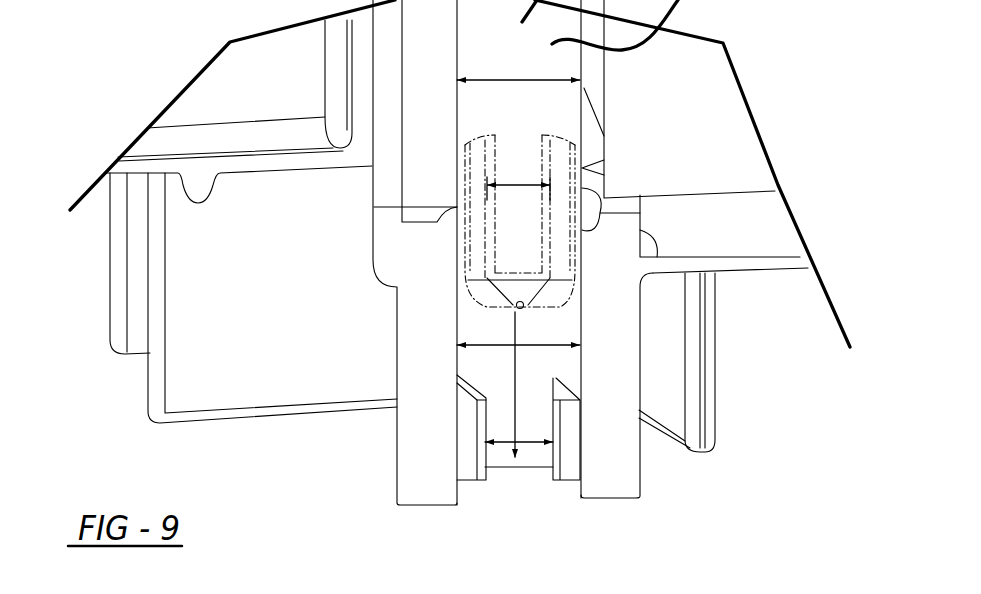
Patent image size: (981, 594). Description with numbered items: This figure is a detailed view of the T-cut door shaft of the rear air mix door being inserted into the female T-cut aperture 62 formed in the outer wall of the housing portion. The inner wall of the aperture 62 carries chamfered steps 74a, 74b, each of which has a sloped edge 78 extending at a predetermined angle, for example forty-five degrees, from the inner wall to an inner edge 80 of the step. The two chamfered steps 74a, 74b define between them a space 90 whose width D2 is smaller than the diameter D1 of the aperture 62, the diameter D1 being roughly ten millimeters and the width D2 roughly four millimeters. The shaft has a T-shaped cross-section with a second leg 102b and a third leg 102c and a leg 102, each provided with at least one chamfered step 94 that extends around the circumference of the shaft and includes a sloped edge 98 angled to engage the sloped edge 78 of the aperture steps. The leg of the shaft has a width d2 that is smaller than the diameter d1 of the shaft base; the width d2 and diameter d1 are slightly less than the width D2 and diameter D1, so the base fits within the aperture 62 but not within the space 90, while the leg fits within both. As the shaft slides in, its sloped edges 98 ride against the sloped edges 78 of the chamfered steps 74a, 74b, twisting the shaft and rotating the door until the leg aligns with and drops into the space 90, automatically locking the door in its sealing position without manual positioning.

The aperture 62 is at (557, 325).
The chamfered step 74a is at (466, 481).
The chamfered step 74b is at (566, 481).
The sloped edge 78 is at (470, 397).
The inner edge 80 is at (528, 392).
The space 90 is at (505, 480).
The chamfered step 94 is at (553, 290).
The sloped edge 98 is at (487, 298).
The leg 102 is at (497, 310).
The second leg 102b is at (565, 298).
The third leg 102c is at (477, 298).
The diameter of the aperture D1 is at (508, 348).
The width of the space D2 is at (513, 442).
The diameter of the base d1 is at (518, 94).
The width of the leg d2 is at (518, 179).